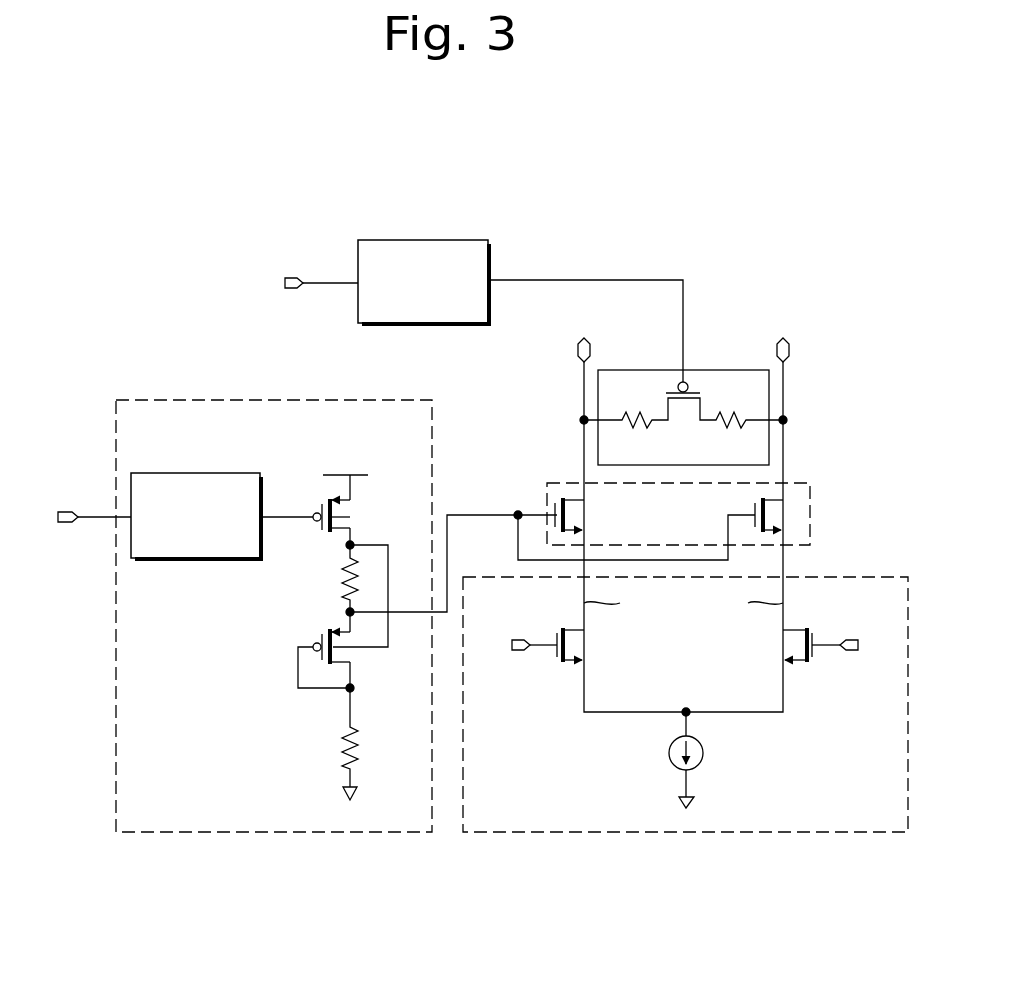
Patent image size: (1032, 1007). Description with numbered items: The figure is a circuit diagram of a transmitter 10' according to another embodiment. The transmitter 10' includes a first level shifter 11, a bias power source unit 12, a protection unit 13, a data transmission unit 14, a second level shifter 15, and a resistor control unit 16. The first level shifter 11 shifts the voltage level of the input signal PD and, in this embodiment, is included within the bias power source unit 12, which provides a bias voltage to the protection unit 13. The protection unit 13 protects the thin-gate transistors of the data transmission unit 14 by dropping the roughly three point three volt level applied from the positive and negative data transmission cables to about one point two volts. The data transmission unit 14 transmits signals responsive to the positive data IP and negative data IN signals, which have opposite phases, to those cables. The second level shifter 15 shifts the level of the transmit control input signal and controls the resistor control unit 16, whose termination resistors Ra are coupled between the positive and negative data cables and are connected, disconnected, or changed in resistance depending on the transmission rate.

The transmitter 10' is at (467, 521).
The first level shifter 11 is at (221, 473).
The bias power source unit 12 is at (163, 400).
The protection unit 13 is at (810, 503).
The data transmission unit 14 is at (826, 832).
The second level shifter 15 is at (447, 240).
The resistor control unit 16 is at (712, 370).